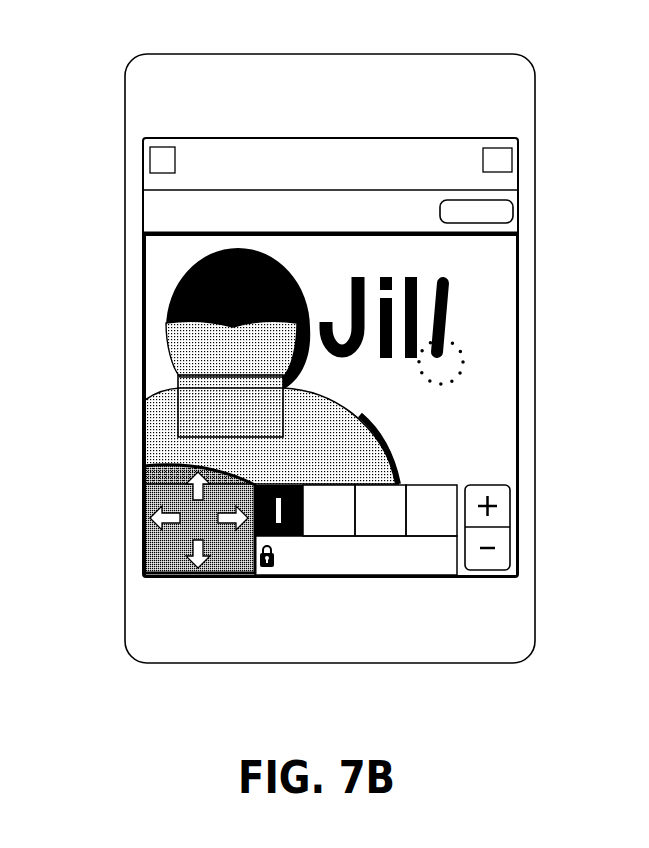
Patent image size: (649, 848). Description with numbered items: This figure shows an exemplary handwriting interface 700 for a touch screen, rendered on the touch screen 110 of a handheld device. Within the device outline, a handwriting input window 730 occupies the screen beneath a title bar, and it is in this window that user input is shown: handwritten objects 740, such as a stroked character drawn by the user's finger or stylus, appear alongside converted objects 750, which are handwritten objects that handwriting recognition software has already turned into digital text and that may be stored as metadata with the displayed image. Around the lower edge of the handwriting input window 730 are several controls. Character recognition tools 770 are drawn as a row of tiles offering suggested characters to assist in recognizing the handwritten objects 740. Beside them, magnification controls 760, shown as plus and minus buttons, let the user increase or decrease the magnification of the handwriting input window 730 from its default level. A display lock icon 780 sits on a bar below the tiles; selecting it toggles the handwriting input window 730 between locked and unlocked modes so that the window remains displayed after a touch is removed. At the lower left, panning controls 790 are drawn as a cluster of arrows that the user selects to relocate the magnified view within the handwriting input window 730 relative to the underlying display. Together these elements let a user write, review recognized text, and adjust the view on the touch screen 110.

The touch screen 110 is at (535, 122).
The handwriting interface 700 is at (200, 27).
The handwriting input window 730 is at (158, 249).
The handwritten objects 740 is at (443, 298).
The converted objects 750 is at (422, 265).
The magnification controls 760 is at (500, 516).
The character recognition tools 770 is at (407, 484).
The display lock icon 780 is at (264, 567).
The panning controls 790 is at (160, 518).